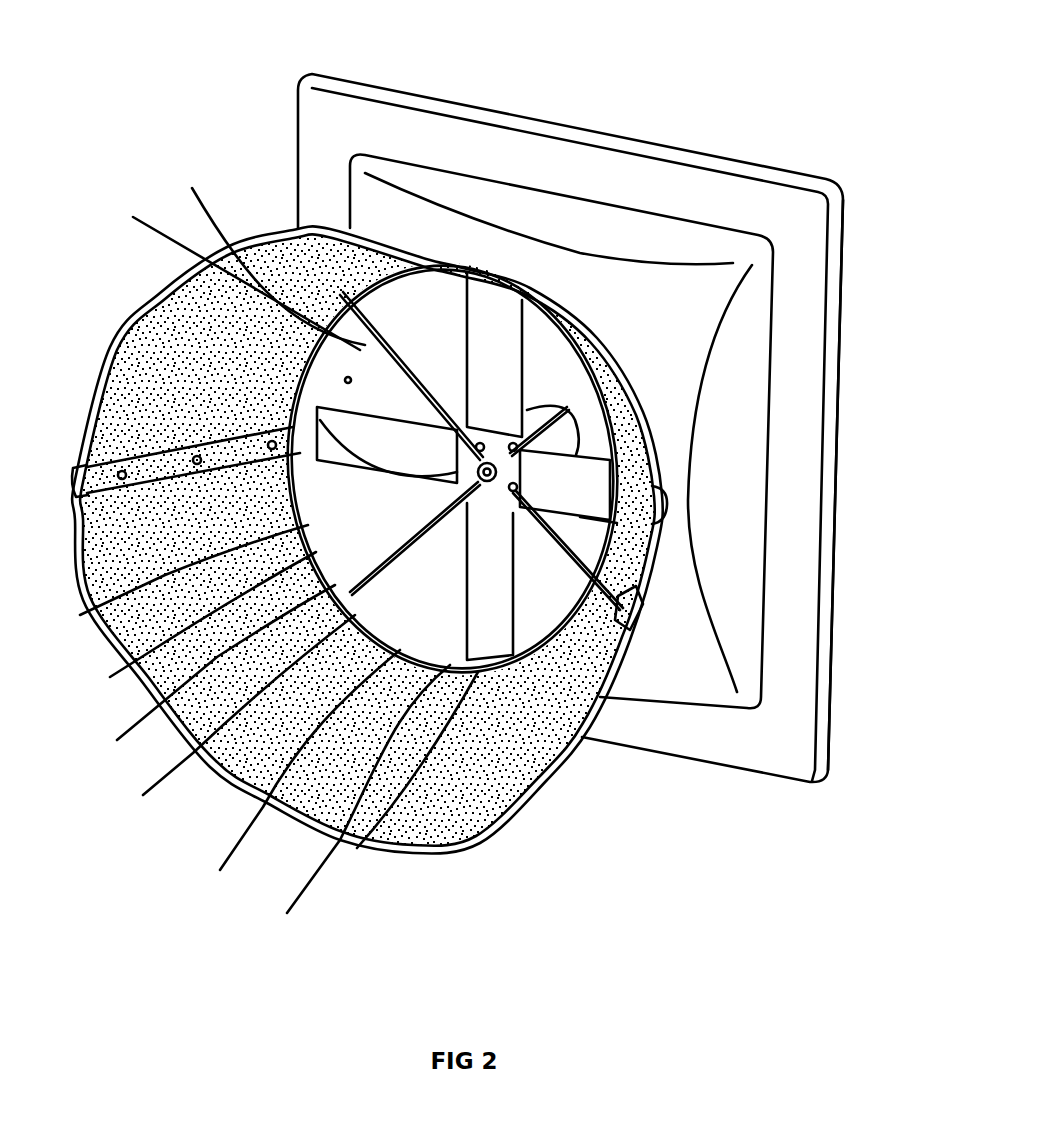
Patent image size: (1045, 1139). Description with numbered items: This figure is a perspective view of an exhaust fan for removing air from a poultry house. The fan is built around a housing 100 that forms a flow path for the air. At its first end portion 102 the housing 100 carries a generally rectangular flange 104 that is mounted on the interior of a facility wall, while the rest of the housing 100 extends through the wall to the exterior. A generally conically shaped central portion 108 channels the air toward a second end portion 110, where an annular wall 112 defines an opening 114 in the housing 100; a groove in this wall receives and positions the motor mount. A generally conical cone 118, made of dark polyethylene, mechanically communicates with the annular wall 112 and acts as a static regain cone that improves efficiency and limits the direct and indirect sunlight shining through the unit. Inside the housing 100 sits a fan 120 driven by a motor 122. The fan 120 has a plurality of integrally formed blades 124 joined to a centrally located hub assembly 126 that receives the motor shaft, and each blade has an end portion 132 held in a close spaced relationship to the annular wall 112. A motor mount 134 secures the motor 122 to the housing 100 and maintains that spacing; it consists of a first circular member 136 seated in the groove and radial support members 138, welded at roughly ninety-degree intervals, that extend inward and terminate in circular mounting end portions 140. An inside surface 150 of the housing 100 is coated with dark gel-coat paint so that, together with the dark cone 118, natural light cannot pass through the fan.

The housing 100 is at (543, 215).
The first end portion 102 is at (833, 633).
The flange 104 is at (817, 757).
The central portion 108 is at (707, 327).
The second end portion 110 is at (294, 776).
The annular wall 112 is at (205, 673).
The opening 114 is at (225, 273).
The cone 118 is at (490, 797).
The fan 120 is at (172, 581).
The motor 122 is at (578, 430).
The blades 124 is at (472, 360).
The hub assembly 126 is at (337, 437).
The end portion 132 is at (480, 315).
The motor mount 134 is at (353, 804).
The first circular member 136 is at (228, 716).
The radial support members 138 is at (190, 624).
The circular mounting end portions 140 is at (266, 254).
The inside surface 150 is at (350, 382).